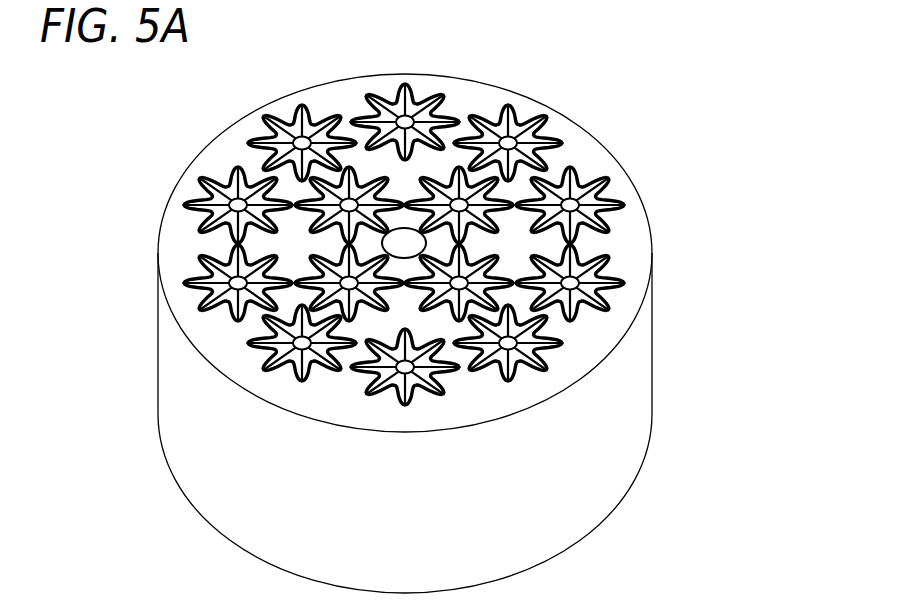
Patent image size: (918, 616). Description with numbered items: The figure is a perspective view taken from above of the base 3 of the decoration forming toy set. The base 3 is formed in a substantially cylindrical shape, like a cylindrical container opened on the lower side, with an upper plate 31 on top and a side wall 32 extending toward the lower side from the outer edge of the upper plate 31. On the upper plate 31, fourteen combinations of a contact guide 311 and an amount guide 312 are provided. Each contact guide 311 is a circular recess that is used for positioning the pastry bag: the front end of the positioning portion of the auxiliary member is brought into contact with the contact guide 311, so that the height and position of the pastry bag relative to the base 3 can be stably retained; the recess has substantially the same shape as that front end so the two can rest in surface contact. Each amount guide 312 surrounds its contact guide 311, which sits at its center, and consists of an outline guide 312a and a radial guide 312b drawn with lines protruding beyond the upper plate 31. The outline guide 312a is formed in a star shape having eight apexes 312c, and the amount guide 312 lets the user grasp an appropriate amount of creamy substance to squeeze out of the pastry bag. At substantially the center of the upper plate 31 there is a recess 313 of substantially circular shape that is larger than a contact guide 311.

The base 3 is at (709, 121).
The upper plate 31 is at (573, 148).
The side wall 32 is at (170, 393).
The contact guide 311 is at (610, 270).
The amount guide 312 is at (582, 250).
The outline guide 312a is at (620, 288).
The radial guide 312b is at (585, 302).
The apex 312c is at (579, 283).
The recess 313 is at (406, 240).